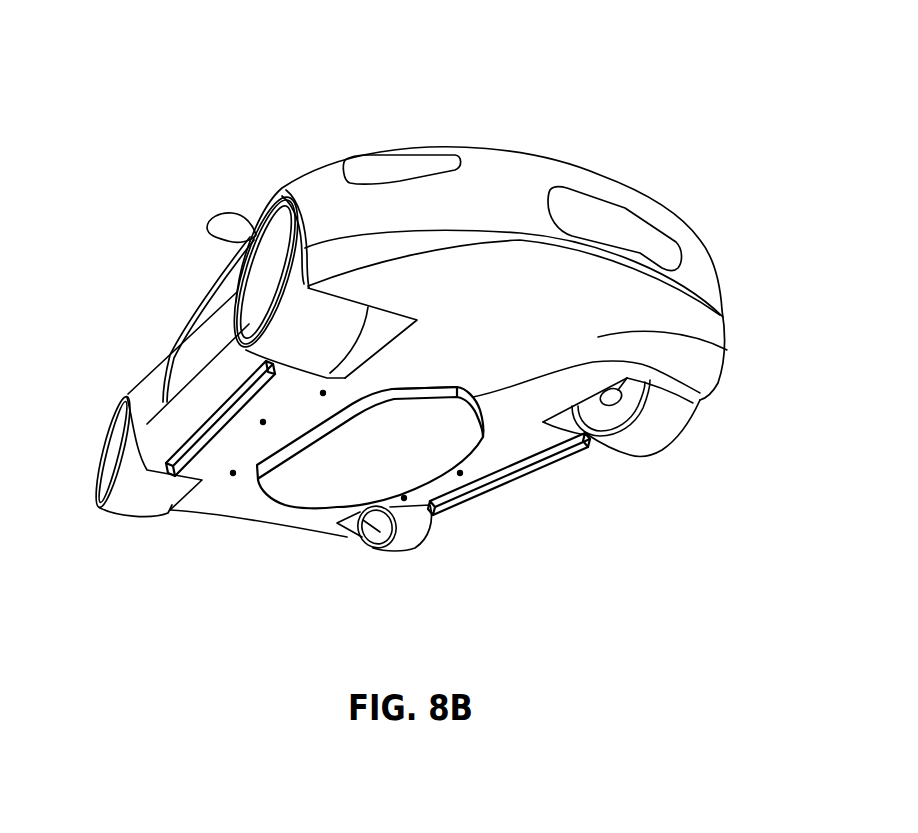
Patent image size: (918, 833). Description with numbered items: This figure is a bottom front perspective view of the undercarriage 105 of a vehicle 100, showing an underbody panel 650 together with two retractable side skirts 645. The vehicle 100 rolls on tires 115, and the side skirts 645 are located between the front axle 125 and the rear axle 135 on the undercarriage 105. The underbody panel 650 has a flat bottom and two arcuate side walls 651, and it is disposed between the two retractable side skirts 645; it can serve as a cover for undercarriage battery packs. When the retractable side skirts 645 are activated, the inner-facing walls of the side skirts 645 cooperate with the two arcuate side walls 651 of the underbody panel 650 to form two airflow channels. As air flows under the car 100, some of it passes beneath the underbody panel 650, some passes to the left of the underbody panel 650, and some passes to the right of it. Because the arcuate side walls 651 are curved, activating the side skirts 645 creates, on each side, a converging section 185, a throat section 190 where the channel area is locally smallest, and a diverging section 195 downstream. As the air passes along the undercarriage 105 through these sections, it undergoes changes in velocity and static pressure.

The vehicle 100 is at (277, 62).
The undercarriage 105 is at (727, 350).
The tire 115 is at (658, 430).
The front axle 125 is at (622, 397).
The rear axle 135 is at (373, 520).
The converging section 185 is at (323, 393).
The throat section 190 is at (233, 473).
The diverging section 195 is at (170, 458).
The retractable side skirt 645 is at (165, 468).
The underbody panel 650 is at (391, 418).
The arcuate side wall 651 is at (439, 390).